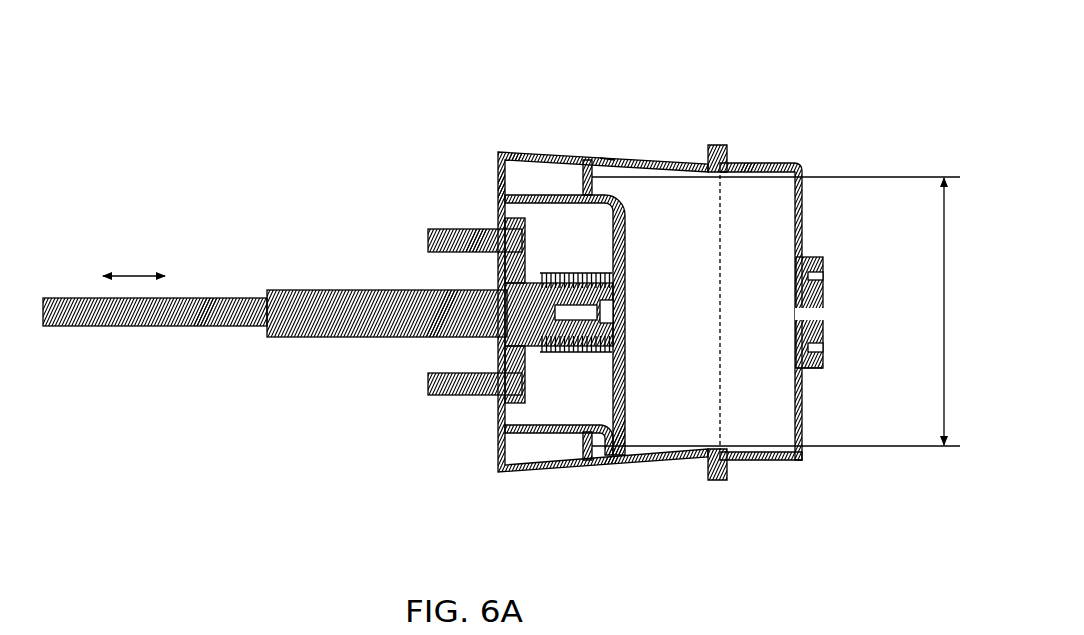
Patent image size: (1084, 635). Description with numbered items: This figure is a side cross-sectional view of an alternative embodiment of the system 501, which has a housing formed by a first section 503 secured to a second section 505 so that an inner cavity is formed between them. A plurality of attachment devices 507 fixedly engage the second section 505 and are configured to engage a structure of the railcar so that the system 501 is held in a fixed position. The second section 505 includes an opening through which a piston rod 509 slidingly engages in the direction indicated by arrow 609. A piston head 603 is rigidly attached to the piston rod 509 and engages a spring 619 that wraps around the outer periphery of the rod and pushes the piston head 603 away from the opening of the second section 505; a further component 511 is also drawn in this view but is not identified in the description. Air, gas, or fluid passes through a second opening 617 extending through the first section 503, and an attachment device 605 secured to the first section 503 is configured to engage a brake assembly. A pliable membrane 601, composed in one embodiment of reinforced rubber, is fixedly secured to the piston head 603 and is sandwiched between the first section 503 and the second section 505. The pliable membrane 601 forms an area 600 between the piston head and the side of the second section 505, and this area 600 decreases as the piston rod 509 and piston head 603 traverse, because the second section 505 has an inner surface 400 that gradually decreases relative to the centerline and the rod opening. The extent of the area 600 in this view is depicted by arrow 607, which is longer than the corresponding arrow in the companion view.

The inner surface 400 is at (612, 160).
The system 501 is at (776, 320).
The first section 503 is at (768, 163).
The second section 505 is at (608, 160).
The attachment devices 507 is at (478, 229).
The piston rod 509 is at (205, 297).
The hub 511 is at (478, 338).
The area 600 is at (628, 193).
The pliable membrane 601 is at (586, 445).
The piston head 603 is at (596, 430).
The attachment device 605 is at (823, 364).
The arrow 607 is at (944, 328).
The arrow 609 is at (135, 276).
The second opening 617 is at (826, 308).
The spring 619 is at (585, 268).